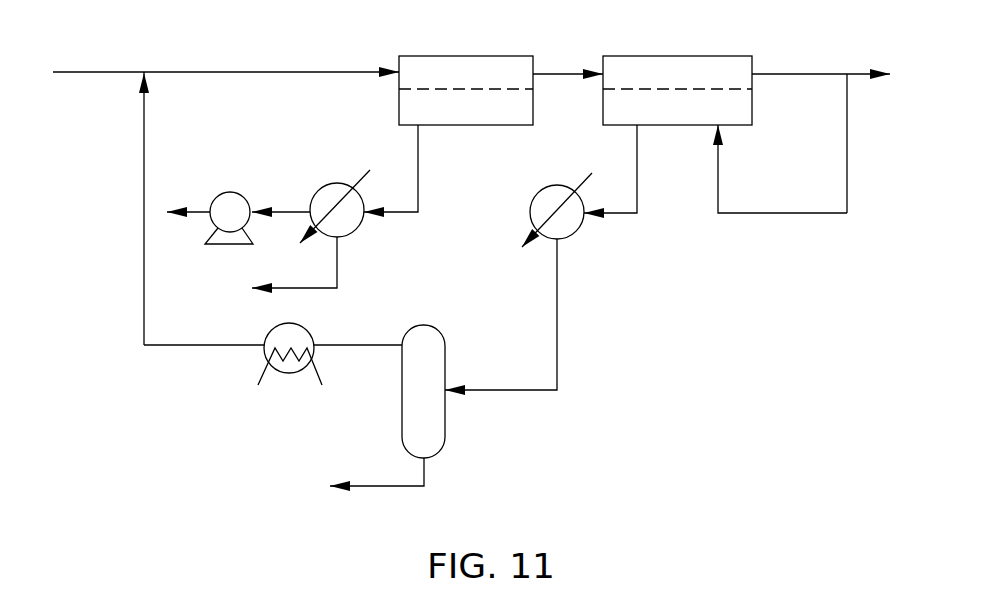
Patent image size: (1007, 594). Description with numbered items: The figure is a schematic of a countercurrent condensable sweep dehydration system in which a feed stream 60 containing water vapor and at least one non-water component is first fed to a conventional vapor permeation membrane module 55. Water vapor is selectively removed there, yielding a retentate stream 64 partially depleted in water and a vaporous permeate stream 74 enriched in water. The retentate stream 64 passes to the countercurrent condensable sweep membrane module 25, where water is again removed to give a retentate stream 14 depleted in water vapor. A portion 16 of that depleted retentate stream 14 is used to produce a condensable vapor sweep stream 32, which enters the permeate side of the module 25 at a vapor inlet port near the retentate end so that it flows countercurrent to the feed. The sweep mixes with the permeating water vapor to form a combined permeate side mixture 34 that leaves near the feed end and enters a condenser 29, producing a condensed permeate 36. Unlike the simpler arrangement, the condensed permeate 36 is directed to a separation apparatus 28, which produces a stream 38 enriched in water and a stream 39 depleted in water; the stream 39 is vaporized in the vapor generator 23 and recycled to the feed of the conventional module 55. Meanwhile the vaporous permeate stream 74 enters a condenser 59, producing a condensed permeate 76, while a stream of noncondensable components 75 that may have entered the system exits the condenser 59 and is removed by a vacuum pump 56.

The feed stream 60 is at (226, 192).
The conventional vapor permeation membrane module 55 is at (432, 56).
The retentate stream 64 is at (568, 59).
The countercurrent condensable sweep membrane module 25 is at (662, 56).
The retentate stream depleted in water vapor 14 is at (821, 59).
The portion of the depleted retentate stream 16 is at (865, 143).
The condensable vapor sweep stream 32 is at (780, 169).
The combined permeate side mixture 34 is at (610, 171).
The condenser 29 is at (578, 232).
The condensed permeate 36 is at (501, 317).
The separation apparatus 28 is at (422, 326).
The stream depleted in water 39 is at (358, 329).
The vapor generator 23 is at (264, 356).
The stream enriched in water 38 is at (327, 473).
The vaporous permeate stream 74 is at (391, 171).
The condenser 59 is at (325, 184).
The condensed permeate 76 is at (294, 265).
The stream of noncondensable components 75 is at (281, 197).
The vacuum pump 56 is at (232, 192).